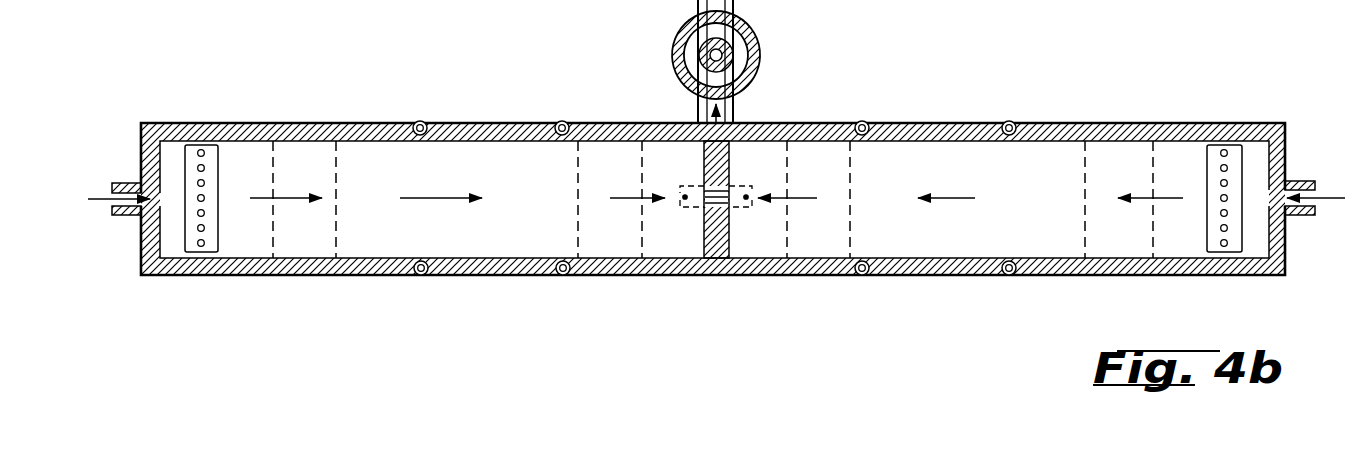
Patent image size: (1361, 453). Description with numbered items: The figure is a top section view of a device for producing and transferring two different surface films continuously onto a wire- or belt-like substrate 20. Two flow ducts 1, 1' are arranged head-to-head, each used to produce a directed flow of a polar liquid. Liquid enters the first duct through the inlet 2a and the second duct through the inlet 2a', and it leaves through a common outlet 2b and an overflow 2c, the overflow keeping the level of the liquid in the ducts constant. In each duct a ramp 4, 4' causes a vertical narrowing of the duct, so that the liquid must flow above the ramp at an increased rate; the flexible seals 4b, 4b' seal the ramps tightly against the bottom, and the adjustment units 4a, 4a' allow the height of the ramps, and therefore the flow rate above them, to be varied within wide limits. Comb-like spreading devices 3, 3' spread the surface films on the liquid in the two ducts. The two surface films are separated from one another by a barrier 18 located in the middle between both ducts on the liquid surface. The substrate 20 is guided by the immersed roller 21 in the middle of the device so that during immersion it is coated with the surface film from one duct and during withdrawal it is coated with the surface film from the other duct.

The flow duct 1 is at (427, 227).
The flow duct 1' is at (999, 225).
The inlet 2a is at (118, 166).
The inlet 2a' is at (1315, 164).
The outlet 2b is at (733, 116).
The overflow 2c is at (728, 57).
The comb-like spreading device 3 is at (203, 160).
The comb-like spreading device 3' is at (1228, 156).
The ramp 4 is at (459, 265).
The ramp 4' is at (1008, 265).
The adjustment unit 4a is at (495, 171).
The adjustment unit 4a' is at (952, 171).
The seal 4b is at (457, 200).
The seal 4b' is at (970, 197).
The barrier 18 is at (703, 140).
The substrate 20 is at (683, 195).
The immersed roller 21 is at (690, 232).